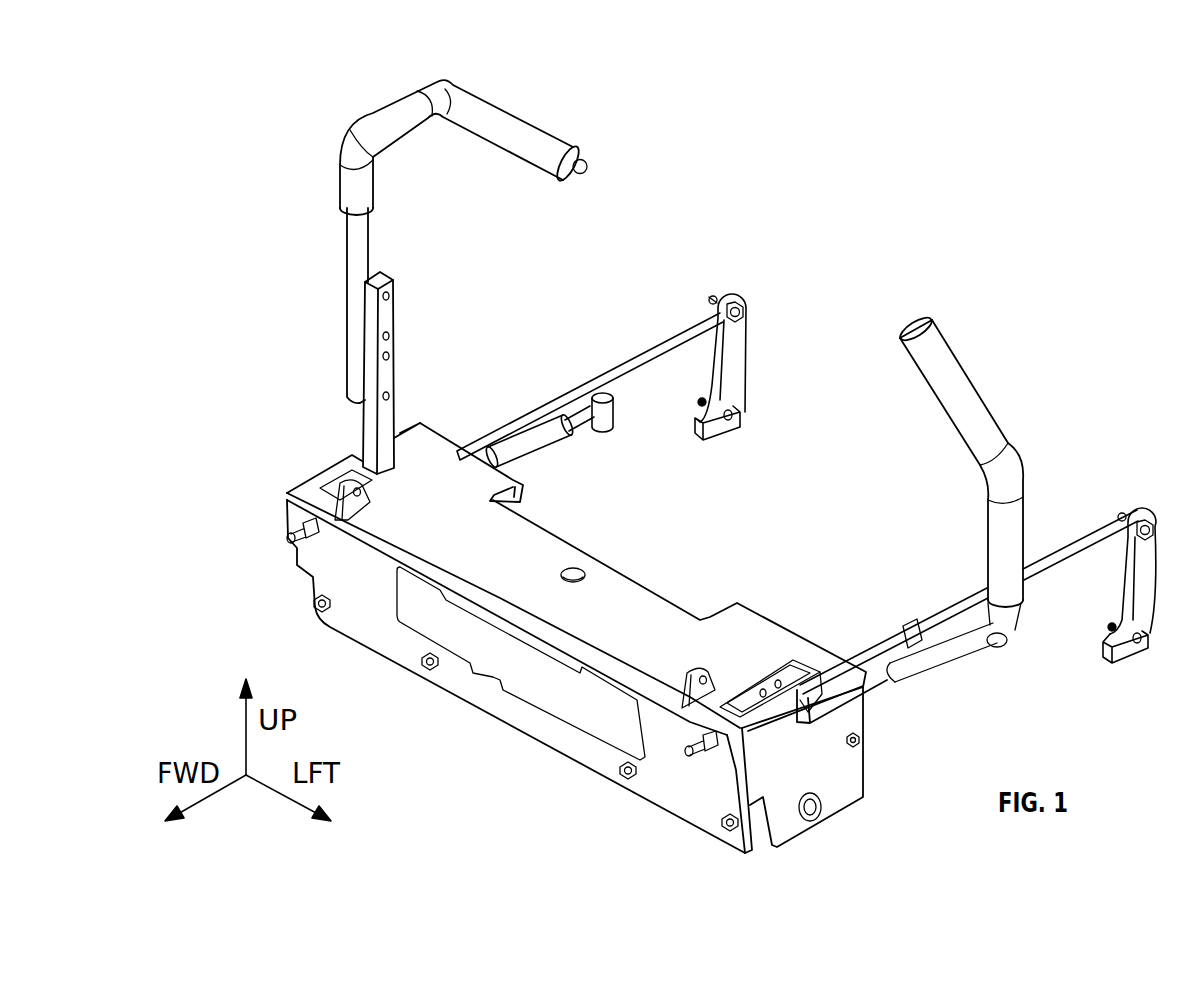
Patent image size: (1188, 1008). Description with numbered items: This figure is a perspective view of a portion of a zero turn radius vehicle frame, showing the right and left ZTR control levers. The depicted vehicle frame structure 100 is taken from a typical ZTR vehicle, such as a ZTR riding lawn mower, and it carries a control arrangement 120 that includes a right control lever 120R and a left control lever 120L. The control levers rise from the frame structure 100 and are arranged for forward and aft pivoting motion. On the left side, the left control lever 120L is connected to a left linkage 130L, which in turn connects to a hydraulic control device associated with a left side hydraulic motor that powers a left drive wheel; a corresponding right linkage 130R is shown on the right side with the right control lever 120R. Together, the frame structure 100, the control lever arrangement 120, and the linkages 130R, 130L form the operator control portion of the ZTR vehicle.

The vehicle frame structure 100 is at (344, 643).
The control arrangement 120 is at (607, 105).
The right control lever 120R is at (393, 360).
The left control lever 120L is at (943, 660).
The right linkage 130R is at (657, 346).
The left linkage 130L is at (1077, 540).